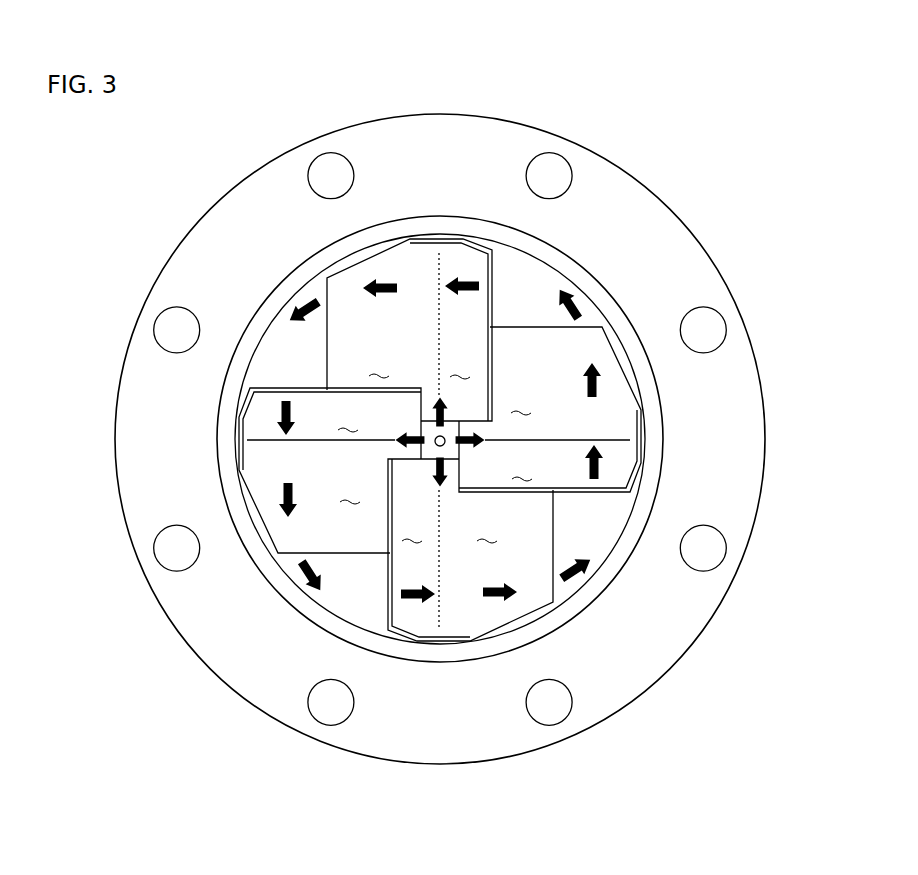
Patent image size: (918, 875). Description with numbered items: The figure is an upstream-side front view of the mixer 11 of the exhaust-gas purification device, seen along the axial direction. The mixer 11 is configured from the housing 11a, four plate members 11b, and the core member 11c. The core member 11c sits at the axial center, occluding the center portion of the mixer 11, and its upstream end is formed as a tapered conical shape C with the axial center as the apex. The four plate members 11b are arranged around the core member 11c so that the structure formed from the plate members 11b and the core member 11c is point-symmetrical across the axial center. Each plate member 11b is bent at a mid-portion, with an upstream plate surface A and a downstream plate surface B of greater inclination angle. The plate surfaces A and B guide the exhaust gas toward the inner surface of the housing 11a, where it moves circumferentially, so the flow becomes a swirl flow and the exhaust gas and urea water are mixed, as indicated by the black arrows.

The mixer 11 is at (190, 148).
The housing 11a is at (286, 296).
The plate member 11b is at (492, 250).
The core member 11c is at (444, 446).